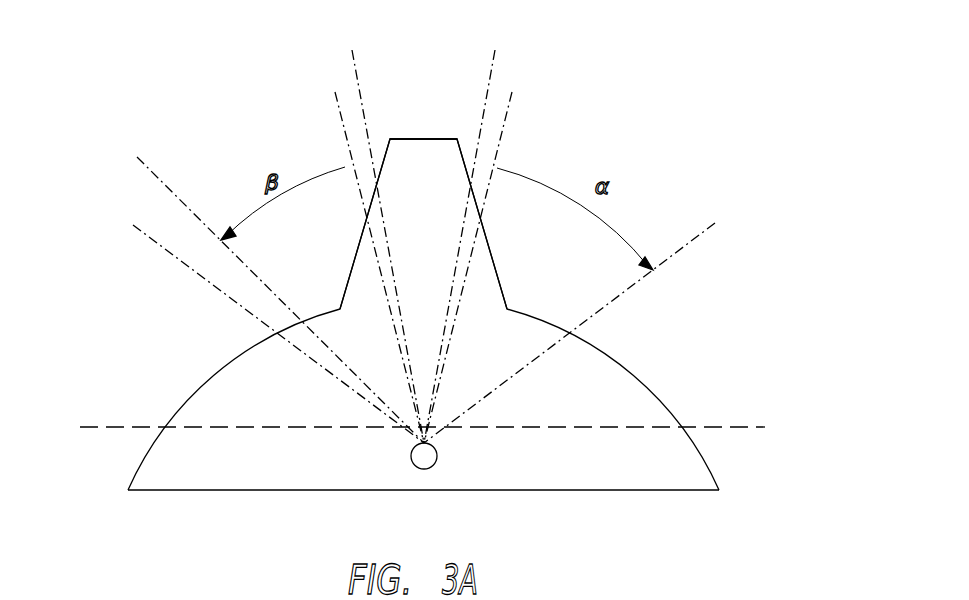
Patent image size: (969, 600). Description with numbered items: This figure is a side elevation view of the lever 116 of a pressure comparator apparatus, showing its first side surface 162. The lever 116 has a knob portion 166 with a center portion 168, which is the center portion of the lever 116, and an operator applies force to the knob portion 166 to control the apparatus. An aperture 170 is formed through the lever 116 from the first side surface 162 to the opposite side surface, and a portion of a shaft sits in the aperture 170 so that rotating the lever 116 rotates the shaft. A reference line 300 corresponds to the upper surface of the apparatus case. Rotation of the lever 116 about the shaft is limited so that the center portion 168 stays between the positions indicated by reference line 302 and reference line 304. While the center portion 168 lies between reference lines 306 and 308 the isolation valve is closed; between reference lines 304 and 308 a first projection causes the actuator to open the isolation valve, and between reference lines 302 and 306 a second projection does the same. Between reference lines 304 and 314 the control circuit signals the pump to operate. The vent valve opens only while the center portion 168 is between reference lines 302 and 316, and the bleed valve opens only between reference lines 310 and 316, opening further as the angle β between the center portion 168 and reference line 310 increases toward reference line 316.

The lever 116 is at (662, 53).
The first side surface 162 is at (637, 381).
The knob portion 166 is at (402, 167).
The center portion 168 is at (424, 157).
The aperture 170 is at (423, 458).
The reference line 300 is at (763, 427).
The reference line 302 is at (150, 236).
The reference line 304 is at (700, 235).
The reference line 306 is at (355, 68).
The reference line 308 is at (492, 68).
The reference line 310 is at (337, 112).
The reference line 314 is at (505, 118).
The reference line 316 is at (155, 176).